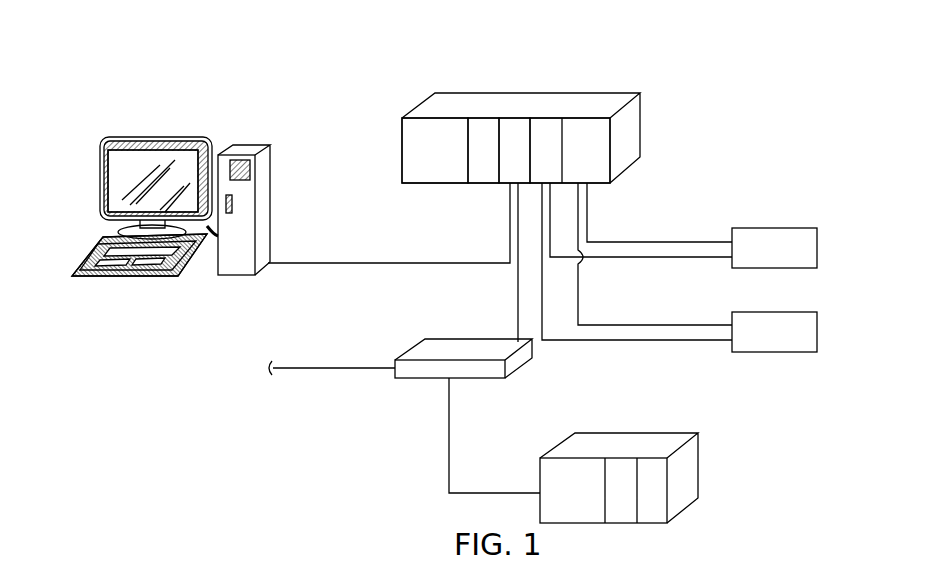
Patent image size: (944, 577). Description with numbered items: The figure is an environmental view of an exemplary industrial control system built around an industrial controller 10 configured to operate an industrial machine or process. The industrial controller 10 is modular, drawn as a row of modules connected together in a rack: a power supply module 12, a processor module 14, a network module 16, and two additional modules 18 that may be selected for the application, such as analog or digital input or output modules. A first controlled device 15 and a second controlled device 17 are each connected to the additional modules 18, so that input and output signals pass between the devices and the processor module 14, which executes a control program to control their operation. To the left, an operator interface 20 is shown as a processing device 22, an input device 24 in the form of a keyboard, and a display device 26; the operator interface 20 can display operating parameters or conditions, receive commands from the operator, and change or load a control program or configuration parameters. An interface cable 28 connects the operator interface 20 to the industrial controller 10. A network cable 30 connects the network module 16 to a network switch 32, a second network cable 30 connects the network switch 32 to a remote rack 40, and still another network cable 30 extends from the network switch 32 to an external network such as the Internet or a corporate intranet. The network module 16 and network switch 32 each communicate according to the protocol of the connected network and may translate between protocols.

The industrial controller 10 is at (413, 102).
The power supply module 12 is at (440, 135).
The processor module 14 is at (482, 130).
The first controlled device 15 is at (762, 259).
The network module 16 is at (513, 130).
The second controlled device 17 is at (762, 343).
The additional modules 18 is at (587, 130).
The operator interface 20 is at (100, 122).
The processing device 22 is at (246, 150).
The input device 24 is at (72, 275).
The display device 26 is at (100, 198).
The interface cable 28 is at (340, 263).
The network cable 30 is at (518, 300).
The network switch 32 is at (425, 352).
The remote rack 40 is at (708, 460).